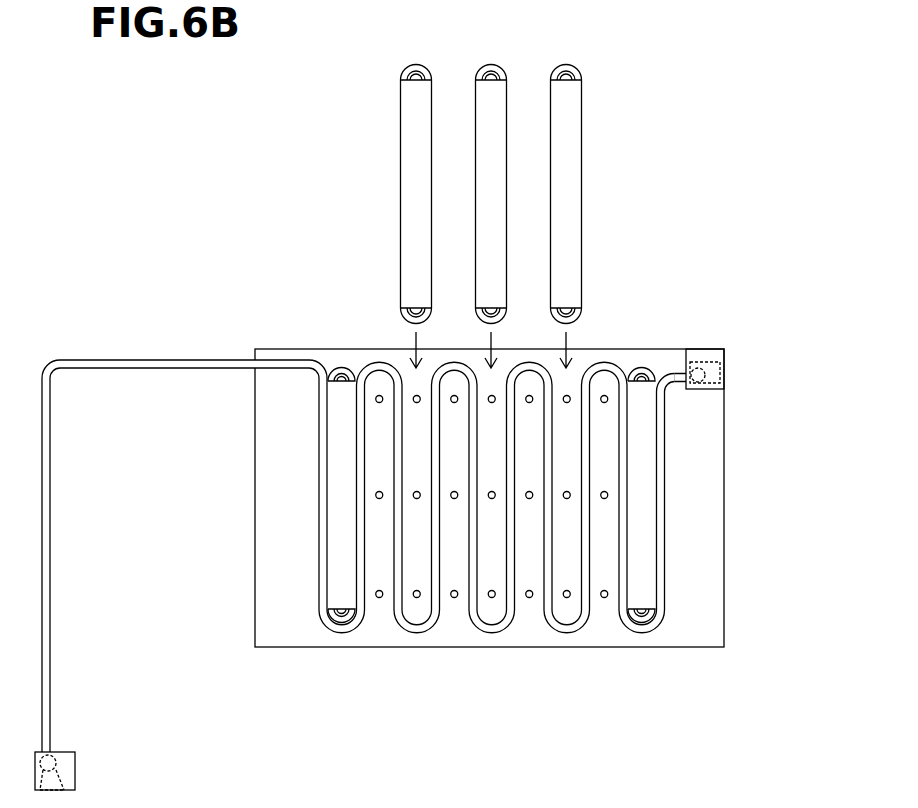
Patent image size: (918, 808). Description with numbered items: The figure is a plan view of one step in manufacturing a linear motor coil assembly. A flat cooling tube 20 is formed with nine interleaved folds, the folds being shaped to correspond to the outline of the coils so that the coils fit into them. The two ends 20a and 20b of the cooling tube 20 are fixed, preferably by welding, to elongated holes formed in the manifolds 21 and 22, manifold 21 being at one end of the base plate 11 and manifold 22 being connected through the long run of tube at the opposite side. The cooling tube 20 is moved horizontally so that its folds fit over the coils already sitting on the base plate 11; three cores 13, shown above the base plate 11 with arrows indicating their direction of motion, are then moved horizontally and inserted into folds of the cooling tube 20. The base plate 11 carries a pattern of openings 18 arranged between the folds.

The base plate 11 is at (710, 540).
The core 13 is at (568, 148).
The hole 18 is at (604, 600).
The cooling tube 20 is at (663, 467).
The end of the cooling tube 20a is at (680, 376).
The end of the cooling tube 20b is at (50, 752).
The manifold 21 is at (718, 355).
The manifold 22 is at (70, 780).